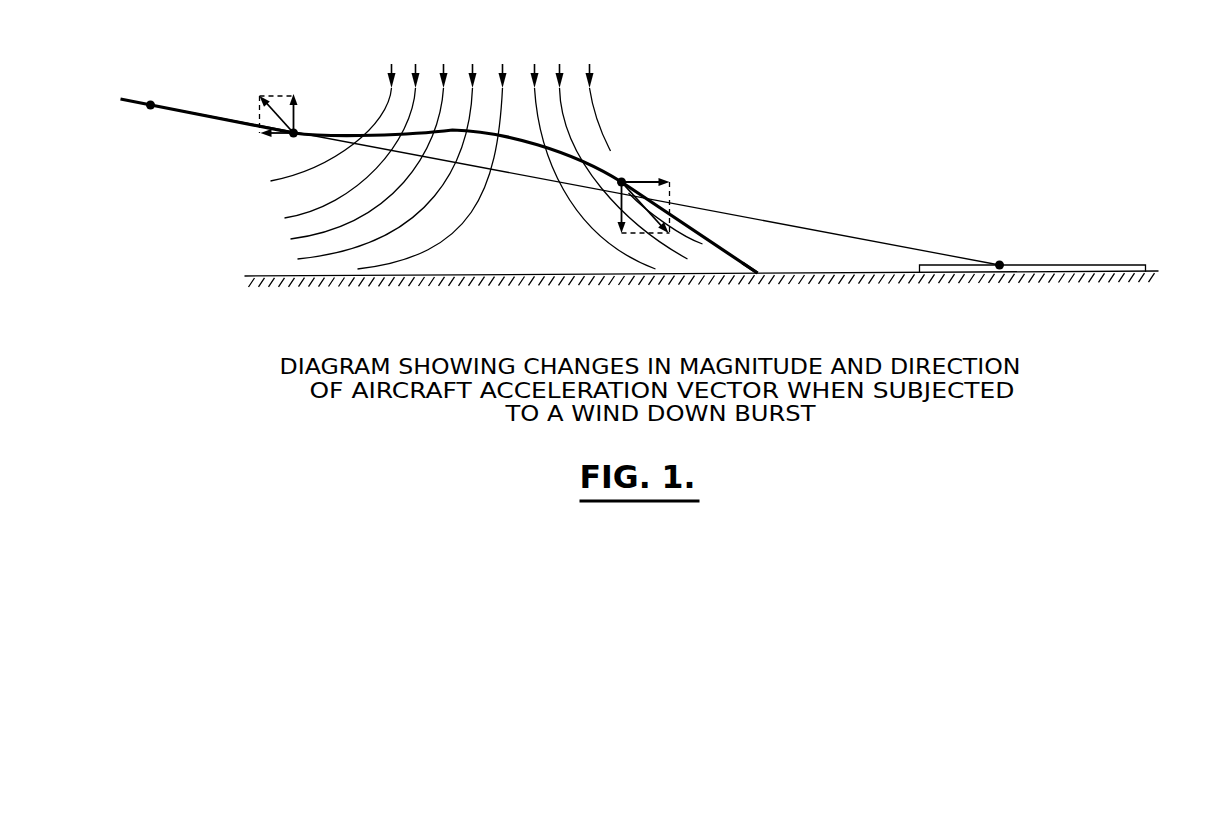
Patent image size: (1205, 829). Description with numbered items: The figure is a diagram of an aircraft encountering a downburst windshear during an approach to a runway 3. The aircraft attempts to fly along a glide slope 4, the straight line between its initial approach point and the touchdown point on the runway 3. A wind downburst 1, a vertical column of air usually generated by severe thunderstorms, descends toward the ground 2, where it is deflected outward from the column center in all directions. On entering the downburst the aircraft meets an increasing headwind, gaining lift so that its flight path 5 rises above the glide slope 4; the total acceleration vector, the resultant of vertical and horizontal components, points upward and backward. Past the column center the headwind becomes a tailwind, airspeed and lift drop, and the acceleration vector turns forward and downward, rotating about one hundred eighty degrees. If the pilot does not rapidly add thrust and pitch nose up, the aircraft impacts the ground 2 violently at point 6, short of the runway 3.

The wind downburst 1 is at (477, 33).
The ground 2 is at (622, 283).
The runway 3 is at (1125, 264).
The glide slope 4 is at (740, 214).
The flight path 5 is at (522, 137).
The impact point 6 is at (755, 272).